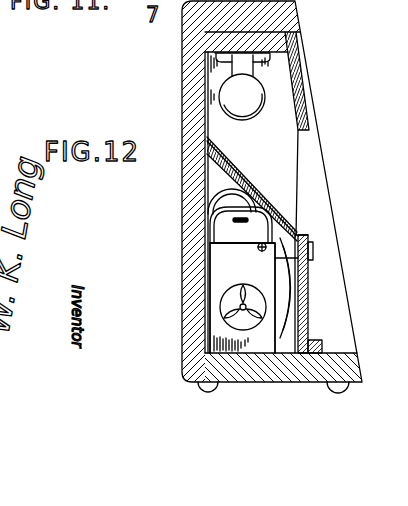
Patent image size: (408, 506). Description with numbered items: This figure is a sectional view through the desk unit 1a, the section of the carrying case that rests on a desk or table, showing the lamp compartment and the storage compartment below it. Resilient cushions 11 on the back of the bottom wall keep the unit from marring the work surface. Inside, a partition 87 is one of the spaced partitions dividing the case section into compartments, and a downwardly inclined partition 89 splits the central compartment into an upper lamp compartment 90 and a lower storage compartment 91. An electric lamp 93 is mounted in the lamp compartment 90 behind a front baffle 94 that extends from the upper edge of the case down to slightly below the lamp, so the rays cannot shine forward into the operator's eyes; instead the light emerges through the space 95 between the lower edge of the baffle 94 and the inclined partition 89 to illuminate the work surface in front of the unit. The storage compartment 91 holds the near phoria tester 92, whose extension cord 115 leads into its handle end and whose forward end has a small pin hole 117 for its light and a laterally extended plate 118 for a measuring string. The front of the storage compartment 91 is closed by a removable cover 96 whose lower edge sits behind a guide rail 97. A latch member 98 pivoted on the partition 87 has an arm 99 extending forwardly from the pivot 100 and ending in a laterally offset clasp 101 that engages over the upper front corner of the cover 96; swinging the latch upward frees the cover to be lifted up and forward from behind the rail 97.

The desk unit 1a is at (182, 333).
The resilient cushions 11 is at (198, 388).
The partition 87 is at (290, 153).
The downwardly inclined partition 89 is at (220, 177).
The lamp compartment 90 is at (220, 115).
The storage compartment 91 is at (210, 212).
The near phoria tester 92 is at (220, 267).
The electric lamp 93 is at (243, 119).
The front baffle 94 is at (306, 99).
The space 95 is at (300, 178).
The removable cover 96 is at (303, 278).
The guide rail 97 is at (322, 345).
The latch member 98 is at (313, 250).
The arm 99 is at (270, 258).
The pivot 100 is at (257, 249).
The clasp 101 is at (310, 238).
The extension cord 115 is at (298, 323).
The pin hole 117 is at (266, 304).
The plate 118 is at (215, 283).